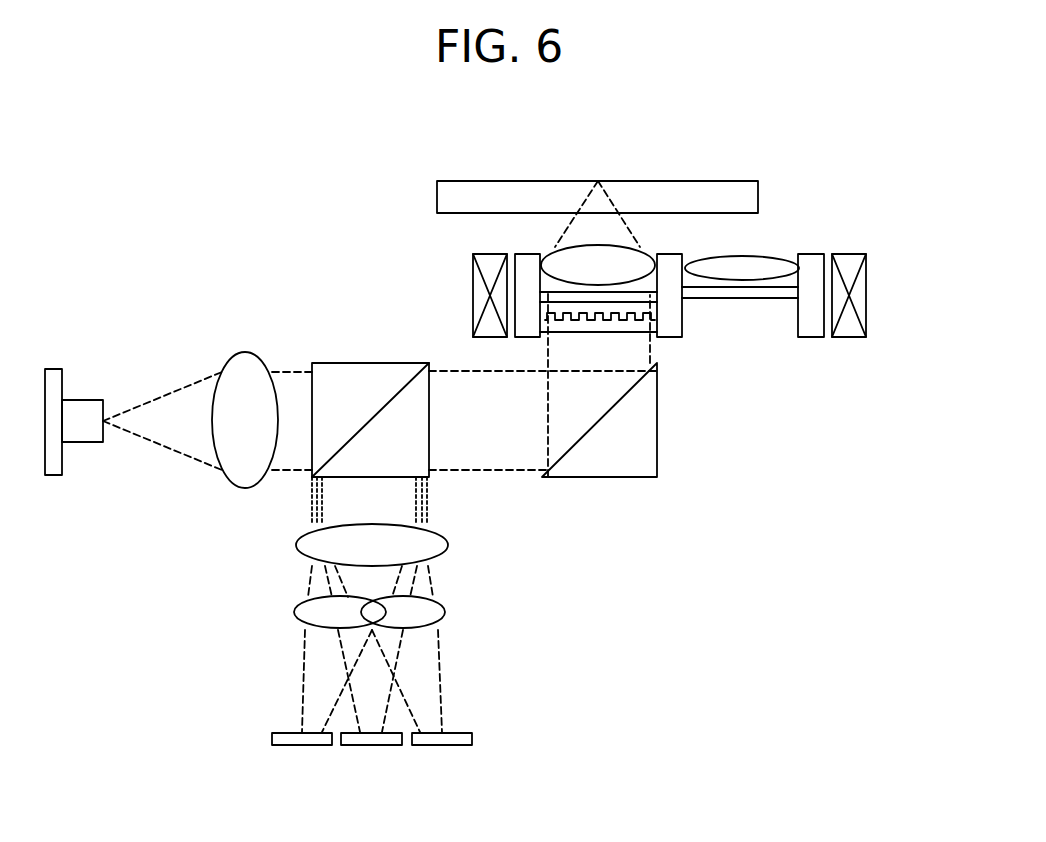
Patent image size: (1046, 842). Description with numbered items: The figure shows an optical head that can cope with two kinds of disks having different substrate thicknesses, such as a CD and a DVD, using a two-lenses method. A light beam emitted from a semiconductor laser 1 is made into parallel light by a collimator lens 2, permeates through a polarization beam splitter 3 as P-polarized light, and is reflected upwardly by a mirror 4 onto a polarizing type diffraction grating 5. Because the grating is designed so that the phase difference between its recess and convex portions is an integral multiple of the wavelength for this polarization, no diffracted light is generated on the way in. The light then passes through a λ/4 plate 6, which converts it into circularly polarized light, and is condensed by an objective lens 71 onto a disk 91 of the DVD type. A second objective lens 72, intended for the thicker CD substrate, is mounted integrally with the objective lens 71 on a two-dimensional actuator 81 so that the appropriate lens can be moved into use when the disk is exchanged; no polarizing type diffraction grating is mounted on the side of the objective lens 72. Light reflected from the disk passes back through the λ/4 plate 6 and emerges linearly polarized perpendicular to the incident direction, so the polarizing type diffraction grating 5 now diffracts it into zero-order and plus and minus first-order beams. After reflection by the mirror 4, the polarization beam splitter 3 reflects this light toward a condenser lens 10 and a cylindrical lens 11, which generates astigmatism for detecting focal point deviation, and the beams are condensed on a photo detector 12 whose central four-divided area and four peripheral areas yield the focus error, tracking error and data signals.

The semiconductor laser 1 is at (80, 400).
The collimator lens 2 is at (245, 352).
The polarization beam splitter 3 is at (318, 363).
The mirror 4 is at (657, 450).
The polarizing type diffraction grating 5 is at (630, 327).
The λ/4 plate 6 is at (553, 293).
The objective lens 71 is at (625, 245).
The objective lens 72 is at (752, 254).
The two-dimensional actuator 81 is at (866, 290).
The disk 91 is at (462, 181).
The condenser lens 10 is at (447, 543).
The cylindrical lens 11 is at (447, 612).
The photo detector 12 is at (472, 738).